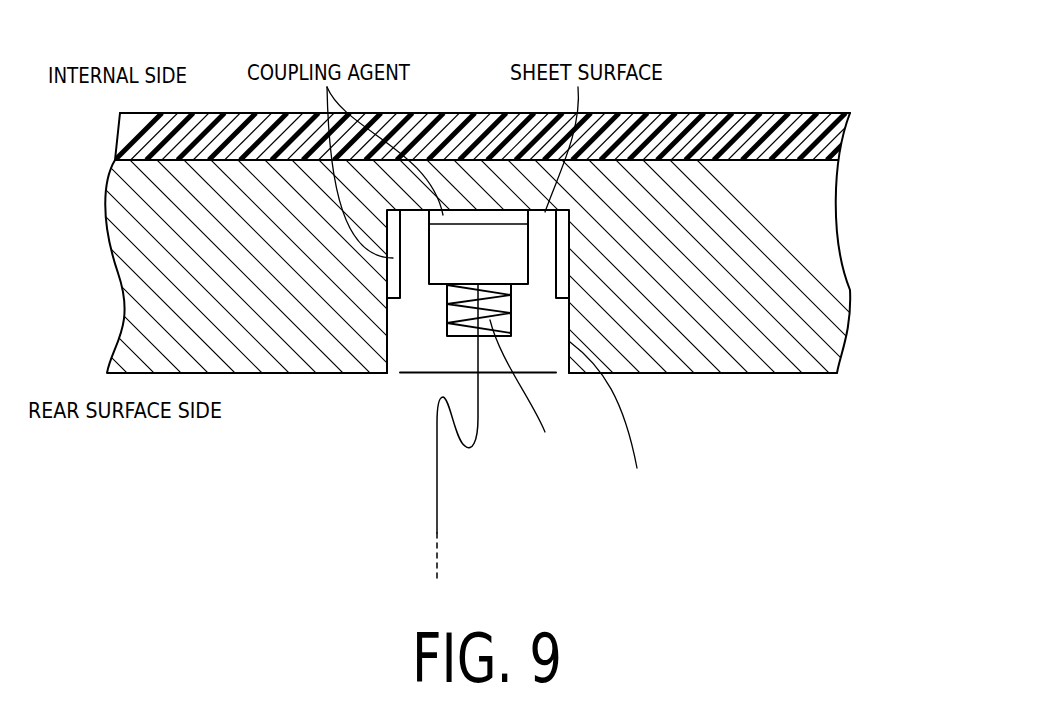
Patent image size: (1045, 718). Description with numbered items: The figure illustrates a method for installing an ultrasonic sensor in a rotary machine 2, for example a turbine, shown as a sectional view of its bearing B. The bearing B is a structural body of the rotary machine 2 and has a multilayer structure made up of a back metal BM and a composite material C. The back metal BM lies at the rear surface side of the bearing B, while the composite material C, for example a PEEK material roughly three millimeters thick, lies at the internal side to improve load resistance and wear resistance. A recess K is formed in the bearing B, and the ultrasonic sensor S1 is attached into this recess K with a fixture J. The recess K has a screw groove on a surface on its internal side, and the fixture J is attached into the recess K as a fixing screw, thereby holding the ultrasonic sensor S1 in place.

The rotary machine 2 is at (475, 191).
The bearing B is at (475, 243).
The composite material C is at (835, 137).
The back metal BM is at (913, 118).
The recess K is at (527, 318).
The ultrasonic sensor S1 is at (478, 237).
The fixture J is at (413, 362).